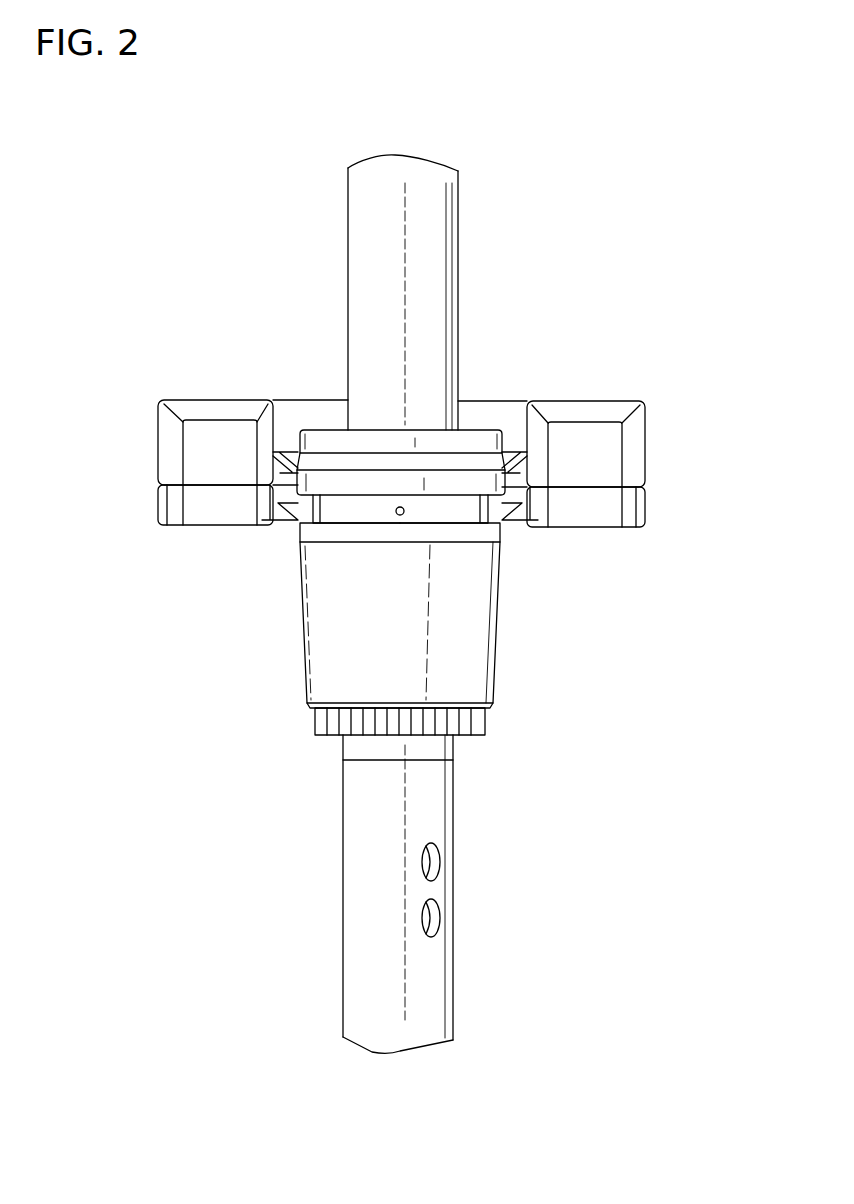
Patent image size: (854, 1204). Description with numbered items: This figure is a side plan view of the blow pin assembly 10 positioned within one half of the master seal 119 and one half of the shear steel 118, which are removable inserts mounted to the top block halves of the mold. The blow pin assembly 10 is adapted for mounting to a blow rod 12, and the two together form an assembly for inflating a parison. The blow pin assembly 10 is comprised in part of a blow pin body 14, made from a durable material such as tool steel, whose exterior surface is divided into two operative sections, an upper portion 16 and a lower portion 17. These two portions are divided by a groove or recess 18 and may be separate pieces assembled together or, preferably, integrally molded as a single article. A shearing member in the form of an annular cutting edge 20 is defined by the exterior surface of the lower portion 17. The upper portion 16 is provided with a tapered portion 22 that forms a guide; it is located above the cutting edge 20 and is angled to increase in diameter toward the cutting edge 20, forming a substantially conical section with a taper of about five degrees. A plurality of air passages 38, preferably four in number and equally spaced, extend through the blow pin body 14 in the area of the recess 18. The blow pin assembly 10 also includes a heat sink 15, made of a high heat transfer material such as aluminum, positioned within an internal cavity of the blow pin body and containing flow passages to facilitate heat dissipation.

The blow pin assembly 10 is at (196, 693).
The blow rod 12 is at (445, 200).
The blow pin body 14 is at (292, 596).
The heat sink 15 is at (315, 723).
The upper portion 16 is at (337, 440).
The lower portion 17 is at (475, 638).
The groove or recess 18 is at (330, 509).
The annular cutting edge 20 is at (476, 528).
The tapered portion 22 is at (316, 458).
The air passages 38 is at (395, 511).
The shear steel 118 is at (630, 507).
The master seal 119 is at (593, 400).